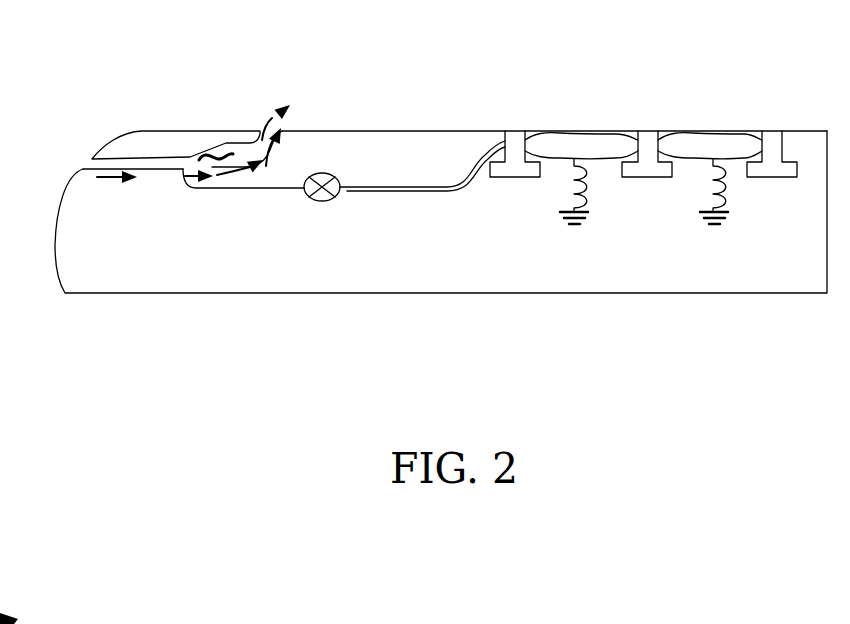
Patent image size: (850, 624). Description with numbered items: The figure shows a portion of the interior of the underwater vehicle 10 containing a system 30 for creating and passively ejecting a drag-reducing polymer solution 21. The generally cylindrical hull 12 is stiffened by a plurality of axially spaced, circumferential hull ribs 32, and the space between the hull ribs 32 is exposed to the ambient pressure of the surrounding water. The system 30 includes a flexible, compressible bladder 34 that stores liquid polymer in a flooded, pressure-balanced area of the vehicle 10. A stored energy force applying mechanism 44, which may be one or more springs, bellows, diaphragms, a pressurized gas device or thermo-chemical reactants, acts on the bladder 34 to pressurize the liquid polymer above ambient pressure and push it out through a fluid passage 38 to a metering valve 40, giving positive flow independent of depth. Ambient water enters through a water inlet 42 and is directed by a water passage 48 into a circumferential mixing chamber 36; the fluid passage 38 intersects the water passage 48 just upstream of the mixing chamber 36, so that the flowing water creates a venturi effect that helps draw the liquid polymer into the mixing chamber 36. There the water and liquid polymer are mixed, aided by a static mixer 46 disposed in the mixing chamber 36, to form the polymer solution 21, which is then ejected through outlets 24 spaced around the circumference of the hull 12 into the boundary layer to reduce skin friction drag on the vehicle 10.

The vehicle 10 is at (485, 313).
The hull 12 is at (483, 120).
The polymer solution 21 is at (288, 108).
The polymer solution outlets 24 is at (265, 112).
The system 30 is at (405, 200).
The hull ribs 32 is at (518, 178).
The bladder 34 is at (575, 124).
The mixing chamber 36 is at (190, 145).
The fluid passage 38 is at (252, 190).
The metering valve 40 is at (326, 160).
The water inlet 42 is at (78, 155).
The stored energy force applying mechanism 44 is at (575, 248).
The static mixer 46 is at (227, 153).
The water passage 48 is at (145, 172).